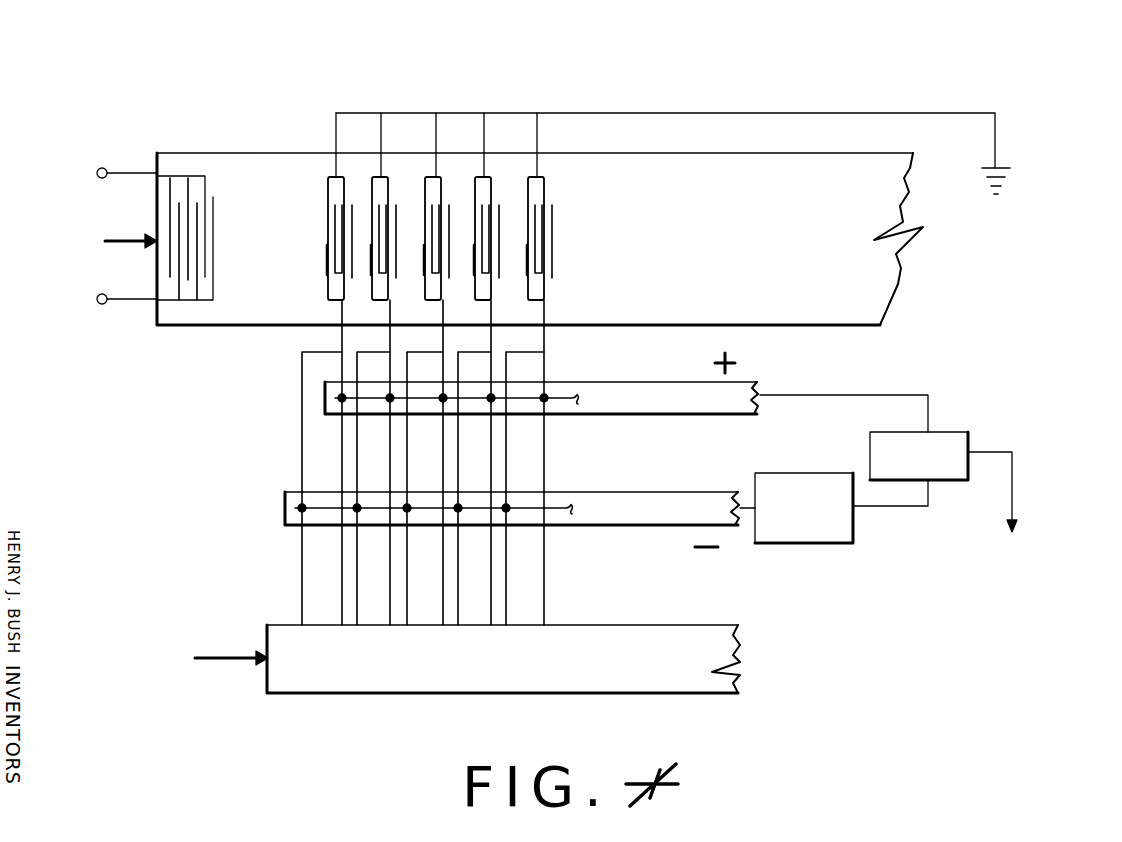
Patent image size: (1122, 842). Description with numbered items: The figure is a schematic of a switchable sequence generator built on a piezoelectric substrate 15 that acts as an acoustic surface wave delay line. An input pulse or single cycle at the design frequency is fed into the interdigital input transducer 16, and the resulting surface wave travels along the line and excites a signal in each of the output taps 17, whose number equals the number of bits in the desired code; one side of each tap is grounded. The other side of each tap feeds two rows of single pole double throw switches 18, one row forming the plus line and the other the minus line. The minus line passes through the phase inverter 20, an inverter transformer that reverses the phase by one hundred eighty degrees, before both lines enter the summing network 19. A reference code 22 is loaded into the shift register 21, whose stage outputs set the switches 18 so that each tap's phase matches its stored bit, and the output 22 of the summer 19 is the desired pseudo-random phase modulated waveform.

The piezoelectric substrate 15 is at (250, 172).
The interdigital input transducer 16 is at (185, 300).
The output taps 17 is at (478, 106).
The switches 18 is at (600, 414).
The summing network 19 is at (954, 432).
The phase inverter 20 is at (820, 543).
The shift register 21 is at (365, 693).
The reference code / output 22 is at (1012, 490).